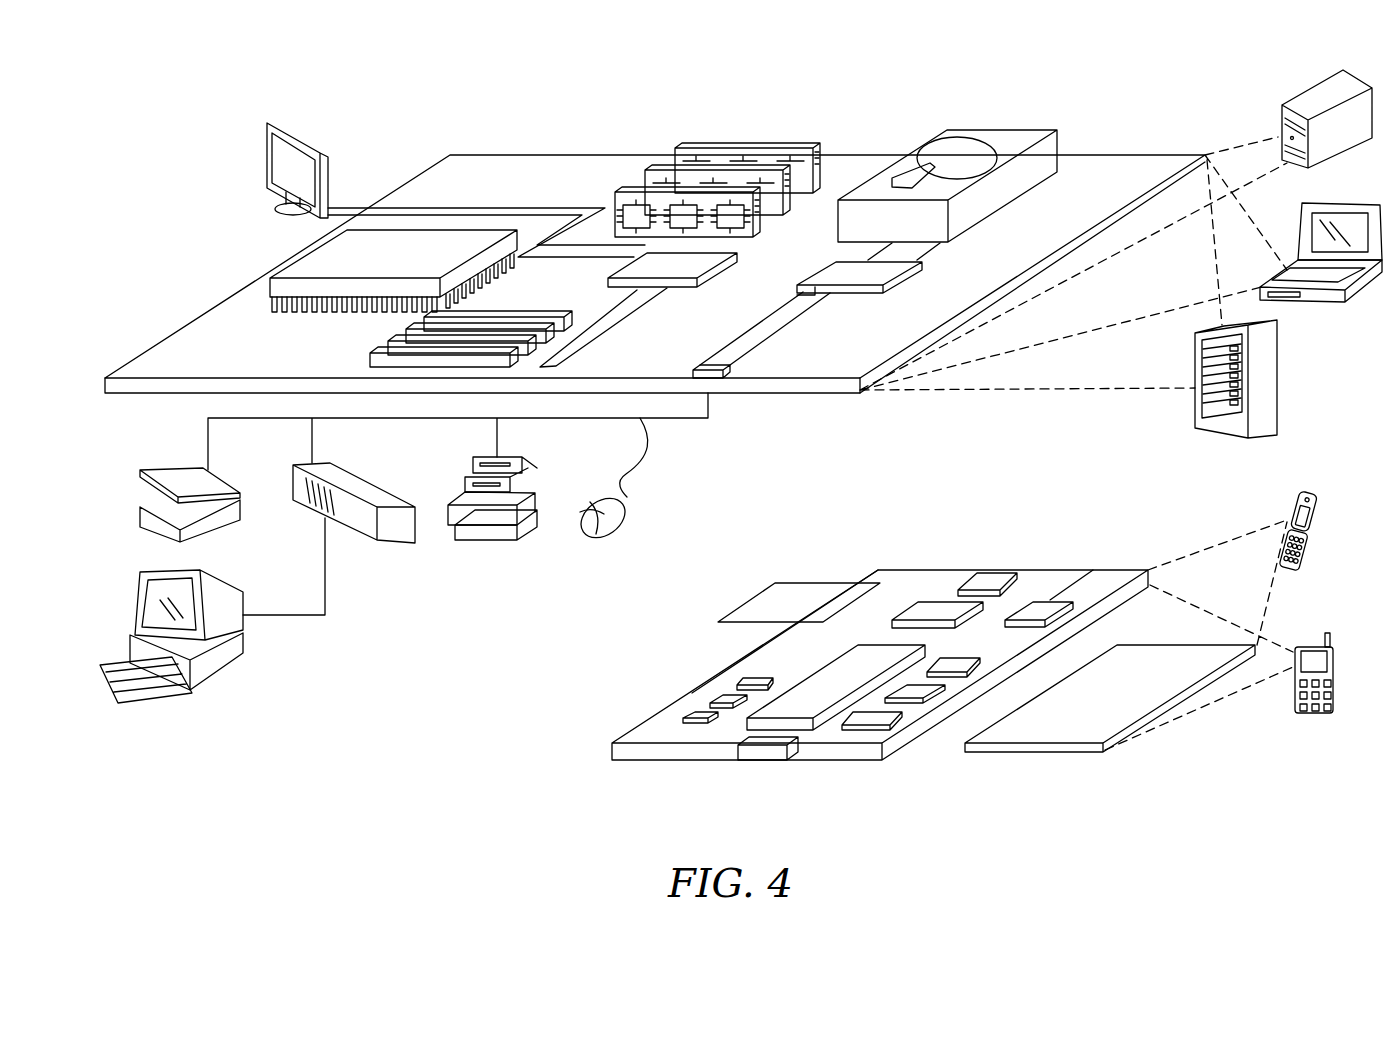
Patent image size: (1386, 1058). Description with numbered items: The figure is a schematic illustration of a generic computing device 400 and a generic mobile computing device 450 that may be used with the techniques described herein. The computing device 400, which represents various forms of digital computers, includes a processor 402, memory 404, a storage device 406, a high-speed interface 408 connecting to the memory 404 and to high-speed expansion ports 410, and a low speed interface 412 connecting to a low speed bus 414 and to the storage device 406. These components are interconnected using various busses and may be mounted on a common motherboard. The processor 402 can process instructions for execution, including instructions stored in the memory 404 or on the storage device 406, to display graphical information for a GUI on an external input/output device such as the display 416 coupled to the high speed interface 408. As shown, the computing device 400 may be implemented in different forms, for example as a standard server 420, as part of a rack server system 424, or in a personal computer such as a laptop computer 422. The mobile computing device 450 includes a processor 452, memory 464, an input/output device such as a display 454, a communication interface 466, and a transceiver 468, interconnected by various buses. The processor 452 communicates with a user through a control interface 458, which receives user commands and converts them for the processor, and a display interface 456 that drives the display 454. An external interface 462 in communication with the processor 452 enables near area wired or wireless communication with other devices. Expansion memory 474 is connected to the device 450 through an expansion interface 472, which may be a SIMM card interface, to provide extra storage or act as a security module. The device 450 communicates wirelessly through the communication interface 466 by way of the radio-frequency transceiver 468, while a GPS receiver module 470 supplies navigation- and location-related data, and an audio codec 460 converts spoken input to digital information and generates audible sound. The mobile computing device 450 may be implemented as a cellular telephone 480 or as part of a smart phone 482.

The computing device 400 is at (396, 98).
The processor 402 is at (295, 258).
The memory 404 is at (752, 148).
The storage device 406 is at (990, 130).
The high-speed interface 408 is at (685, 263).
The high-speed expansion ports 410 is at (399, 343).
The low speed interface 412 is at (830, 271).
The low speed bus 414 is at (716, 366).
The display 416 is at (272, 122).
The standard server 420 is at (1303, 100).
The laptop computer 422 is at (1358, 200).
The rack server system 424 is at (1280, 383).
The mobile computer device 450 is at (558, 772).
The processor 452 is at (803, 693).
The display 454 is at (1149, 662).
The display interface 456 is at (885, 718).
The control interface 458 is at (922, 692).
The audio codec 460 is at (963, 659).
The external interface 462 is at (762, 748).
The memory 464 is at (718, 697).
The communication interface 466 is at (938, 603).
The transceiver 468 is at (1032, 603).
The GPS receiver module 470 is at (987, 574).
The expansion interface 472 is at (862, 583).
The expansion memory 474 is at (776, 583).
The cellular telephone 480 is at (1297, 492).
The smart phone 482 is at (1311, 645).